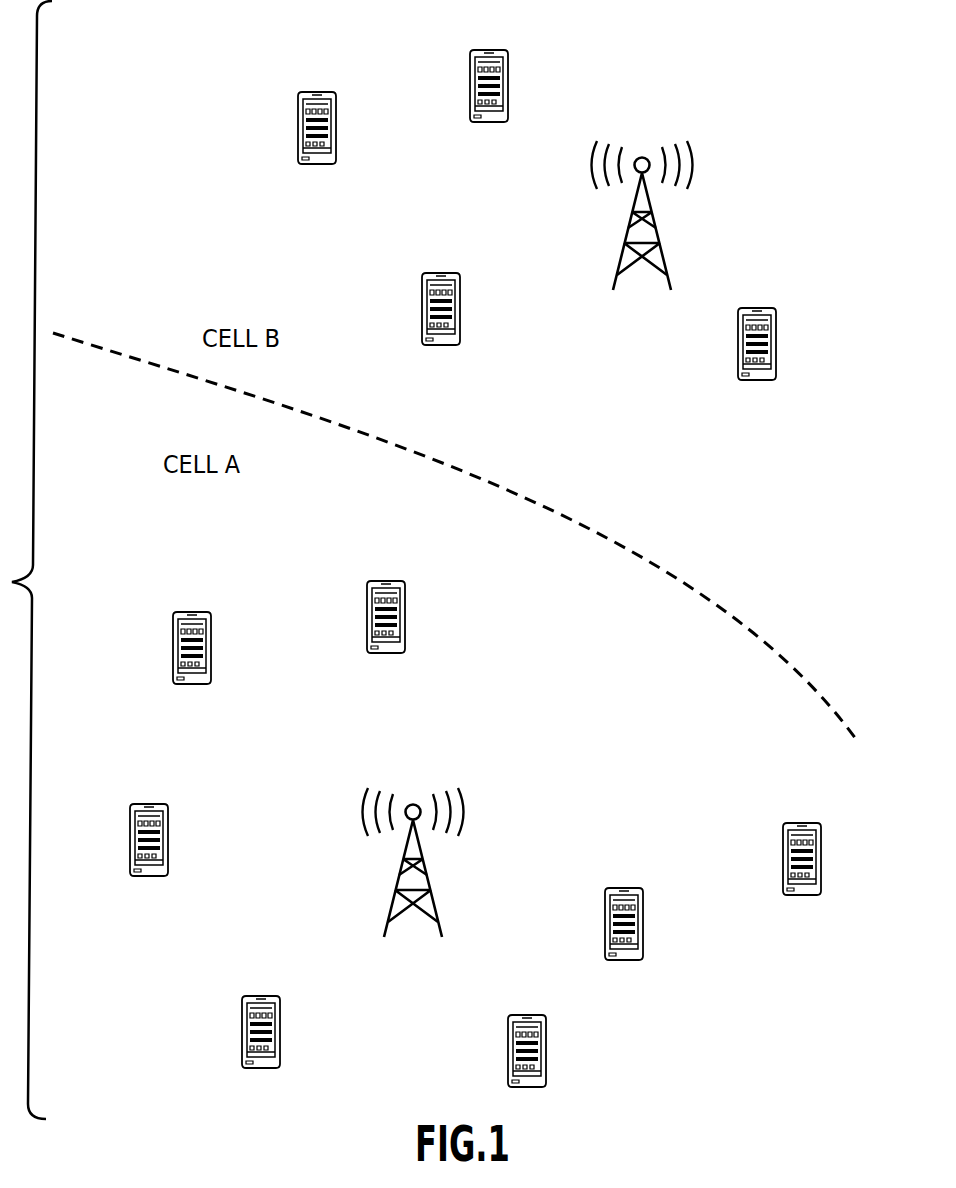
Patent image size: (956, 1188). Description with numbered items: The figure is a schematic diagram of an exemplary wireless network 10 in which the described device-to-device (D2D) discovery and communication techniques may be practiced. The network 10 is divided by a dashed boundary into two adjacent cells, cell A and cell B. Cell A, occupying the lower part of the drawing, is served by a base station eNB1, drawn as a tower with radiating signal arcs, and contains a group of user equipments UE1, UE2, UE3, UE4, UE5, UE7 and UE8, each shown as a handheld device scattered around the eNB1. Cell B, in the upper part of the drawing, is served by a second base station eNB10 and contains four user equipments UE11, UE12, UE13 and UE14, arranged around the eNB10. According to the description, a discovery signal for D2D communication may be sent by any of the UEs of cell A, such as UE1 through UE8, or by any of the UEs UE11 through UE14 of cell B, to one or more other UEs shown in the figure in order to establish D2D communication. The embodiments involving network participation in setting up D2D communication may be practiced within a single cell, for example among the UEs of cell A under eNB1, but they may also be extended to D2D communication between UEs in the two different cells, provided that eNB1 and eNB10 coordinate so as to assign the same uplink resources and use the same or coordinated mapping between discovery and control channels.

The wireless network 10 is at (120, 46).
The user equipment UE1 is at (192, 662).
The user equipment UE2 is at (385, 632).
The user equipment UE3 is at (150, 856).
The user equipment UE4 is at (262, 1047).
The user equipment UE5 is at (624, 941).
The user equipment UE7 is at (802, 875).
The user equipment UE8 is at (526, 1067).
The user equipment UE11 is at (443, 324).
The user equipment UE12 is at (316, 144).
The user equipment UE13 is at (757, 359).
The user equipment UE14 is at (490, 102).
The eNB of cell A eNB1 is at (413, 878).
The eNB of cell B eNB10 is at (642, 232).